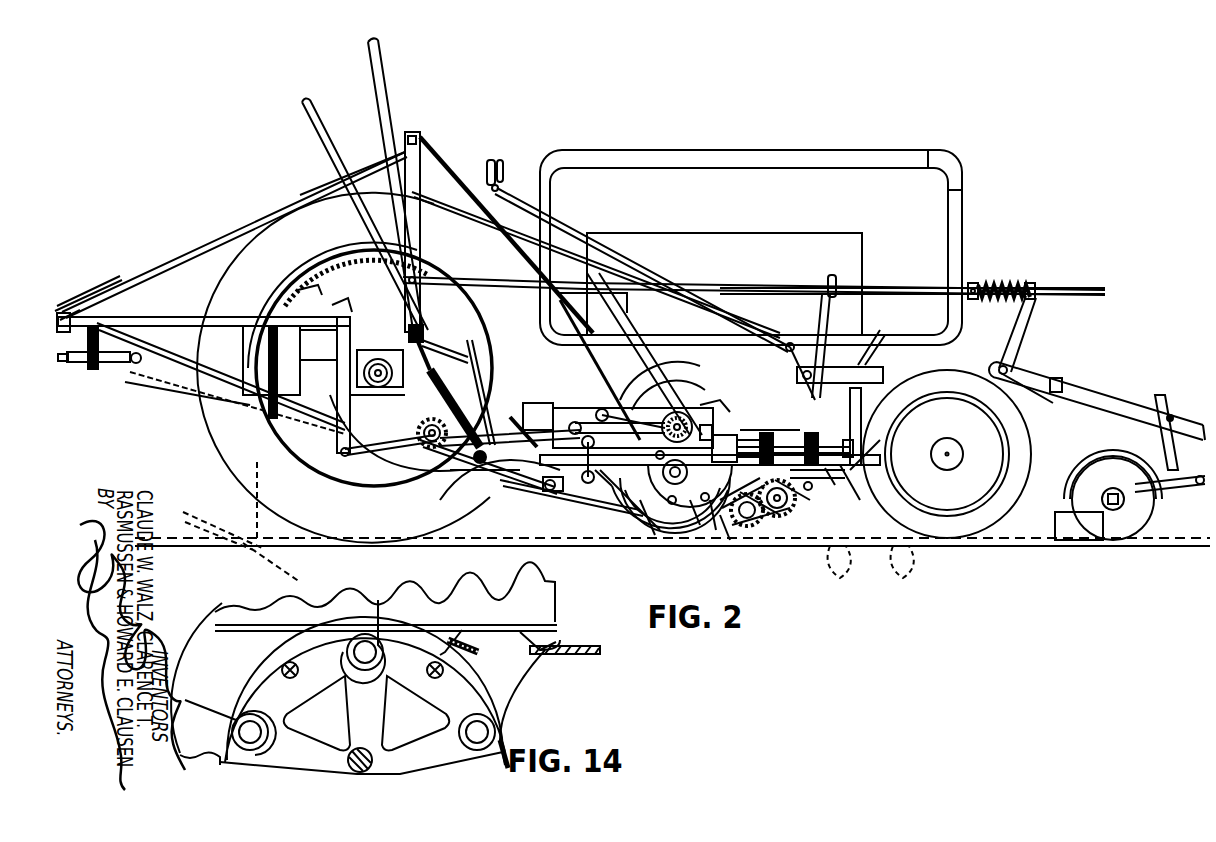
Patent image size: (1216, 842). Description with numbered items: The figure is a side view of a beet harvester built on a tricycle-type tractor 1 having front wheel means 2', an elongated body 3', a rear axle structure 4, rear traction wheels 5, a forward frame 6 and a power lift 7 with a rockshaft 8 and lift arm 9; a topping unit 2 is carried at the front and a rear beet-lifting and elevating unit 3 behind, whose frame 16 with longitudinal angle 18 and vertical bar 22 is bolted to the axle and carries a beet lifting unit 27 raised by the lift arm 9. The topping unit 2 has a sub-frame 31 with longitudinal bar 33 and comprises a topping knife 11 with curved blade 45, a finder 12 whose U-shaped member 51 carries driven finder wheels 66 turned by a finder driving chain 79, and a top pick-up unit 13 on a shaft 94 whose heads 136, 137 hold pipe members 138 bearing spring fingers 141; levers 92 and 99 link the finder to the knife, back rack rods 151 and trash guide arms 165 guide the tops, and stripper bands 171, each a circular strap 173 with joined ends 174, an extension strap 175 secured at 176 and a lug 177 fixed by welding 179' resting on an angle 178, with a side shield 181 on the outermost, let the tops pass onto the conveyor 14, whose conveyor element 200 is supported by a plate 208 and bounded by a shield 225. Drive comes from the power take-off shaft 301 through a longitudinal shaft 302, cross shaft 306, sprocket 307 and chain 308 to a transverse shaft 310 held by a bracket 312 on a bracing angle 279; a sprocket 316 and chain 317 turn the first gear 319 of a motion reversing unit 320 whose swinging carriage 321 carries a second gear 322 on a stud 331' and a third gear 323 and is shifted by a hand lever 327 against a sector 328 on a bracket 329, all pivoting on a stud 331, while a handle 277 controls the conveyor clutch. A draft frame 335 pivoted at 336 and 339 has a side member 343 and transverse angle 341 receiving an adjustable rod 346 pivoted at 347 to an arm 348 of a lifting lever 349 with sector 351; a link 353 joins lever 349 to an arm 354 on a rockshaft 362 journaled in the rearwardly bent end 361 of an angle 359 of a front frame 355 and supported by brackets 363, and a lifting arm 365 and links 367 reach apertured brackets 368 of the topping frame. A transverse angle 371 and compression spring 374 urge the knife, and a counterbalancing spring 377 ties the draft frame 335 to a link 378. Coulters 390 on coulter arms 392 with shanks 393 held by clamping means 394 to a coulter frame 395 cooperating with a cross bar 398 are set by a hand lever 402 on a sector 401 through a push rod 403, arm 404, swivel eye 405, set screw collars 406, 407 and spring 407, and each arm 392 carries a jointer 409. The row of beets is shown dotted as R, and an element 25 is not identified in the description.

In FIG. 2, the tractor 1 is at (676, 142).
In FIG. 2, the topping unit 2 is at (701, 417).
In FIG. 2, the front wheel means 2' is at (962, 454).
In FIG. 2, the rear beet-lifting and elevating unit 3 is at (83, 274).
In FIG. 2, the frame or body 3' is at (756, 224).
In FIG. 2, the rear axle structure 4 is at (378, 396).
In FIG. 2, the rear traction wheels 5 is at (262, 260).
In FIG. 2, the frame 6 is at (692, 340).
In FIG. 2, the power lift 7 is at (300, 295).
In FIG. 2, the rockshaft 8 is at (333, 268).
In FIG. 2, the lift arm 9 is at (309, 280).
In FIG. 2, the topping knife 11 is at (615, 530).
In FIG. 2, the finder or gauge 12 is at (785, 522).
In FIG. 2, the top pick-up means 13 is at (676, 530).
In FIG. 2, the transverse shiftable conveyor 14 is at (782, 424).
In FIG. 2, the frame 16 is at (178, 316).
In FIG. 2, the longitudinally extending angle 18 is at (128, 313).
In FIG. 2, the vertical bar 22 is at (335, 420).
In FIG. 2, the tie rod 25 is at (200, 385).
In FIG. 2, the beet lifting unit 27 is at (248, 568).
In FIG. 2, the sub-frame 31 is at (830, 480).
In FIG. 2, the longitudinally extending bar 33 is at (798, 480).
In FIG. 2, the cutting blade 45 is at (730, 540).
In FIG. 2, the U-shaped member 51 is at (790, 498).
In FIG. 2, the finder wheels 66 is at (778, 520).
In FIG. 2, the finder driving chain 79 is at (748, 500).
In FIG. 2, the lever 92 is at (748, 528).
In FIG. 14, the shaft 94 is at (373, 762).
In FIG. 2, the lever 99 is at (618, 452).
In FIG. 14, the rotatable head 136 is at (388, 690).
In FIG. 2, the rotatable head 137 is at (712, 530).
In FIG. 14, the pipe members 138 is at (348, 660).
In FIG. 14, the spring fingers 141 is at (380, 612).
In FIG. 2, the back rack rods 151 is at (634, 526).
In FIG. 2, the trash guide arms 165 is at (650, 530).
In FIG. 14, the stripper bands 171 is at (522, 742).
In FIG. 14, the strap 173 is at (262, 665).
In FIG. 14, the ends 174 is at (470, 650).
In FIG. 14, the extension strap 175 is at (468, 630).
In FIG. 14, the securing point 176 is at (355, 626).
In FIG. 14, the lug 177 is at (562, 642).
In FIG. 14, the angle 178 is at (592, 650).
In FIG. 14, the welding 179' is at (536, 619).
In FIG. 14, the side shield 181 is at (215, 620).
In FIG. 2, the conveyor element 200 is at (766, 426).
In FIG. 2, the plate 208 is at (847, 499).
In FIG. 2, the shield 225 is at (845, 424).
In FIG. 2, the handle 277 is at (548, 318).
In FIG. 2, the angle 279 is at (422, 142).
In FIG. 2, the power take-off shaft 301 is at (275, 420).
In FIG. 2, the longitudinal shaft 302 is at (232, 365).
In FIG. 2, the cross shaft 306 is at (136, 366).
In FIG. 2, the sprocket 307 is at (130, 365).
In FIG. 2, the chain 308 is at (220, 408).
In FIG. 2, the transverse shaft 310 is at (418, 430).
In FIG. 2, the bracket 312 is at (395, 482).
In FIG. 2, the sprocket 316 is at (430, 478).
In FIG. 2, the sprocket chain 317 is at (530, 425).
In FIG. 2, the first gear 319 is at (690, 392).
In FIG. 2, the motion reversing unit 320 is at (690, 415).
In FIG. 2, the swinging carriage 321 is at (600, 490).
In FIG. 2, the second gear 322 is at (698, 520).
In FIG. 2, the third gear 323 is at (718, 410).
In FIG. 2, the hand lever 327 is at (565, 238).
In FIG. 2, the sector 328 is at (668, 385).
In FIG. 2, the bracket 329 is at (665, 535).
In FIG. 2, the stud 331 is at (600, 370).
In FIG. 2, the stud 331' is at (642, 511).
In FIG. 2, the draft frame 335 is at (478, 490).
In FIG. 2, the pivot 336 is at (348, 452).
In FIG. 2, the pivot 339 is at (545, 505).
In FIG. 2, the transverse angle 341 is at (471, 473).
In FIG. 2, the side member 343 is at (515, 495).
In FIG. 2, the adjustable rod connection 346 is at (470, 358).
In FIG. 2, the pivot 347 is at (468, 340).
In FIG. 2, the forwardly extending arm 348 is at (430, 350).
In FIG. 2, the lifting lever 349 is at (325, 178).
In FIG. 2, the sector 351 is at (352, 305).
In FIG. 2, the link 353 is at (515, 262).
In FIG. 2, the arm 354 is at (834, 297).
In FIG. 2, the front frame 355 is at (886, 388).
In FIG. 2, the angle 359 is at (862, 355).
In FIG. 2, the rearwardly bent end 361 is at (850, 412).
In FIG. 2, the rockshaft 362 is at (786, 349).
In FIG. 2, the brackets 363 is at (800, 348).
In FIG. 2, the lifting arm 365 is at (838, 345).
In FIG. 2, the links 367 is at (862, 428).
In FIG. 2, the apertured brackets 368 is at (862, 452).
In FIG. 2, the transverse angle 371 is at (500, 515).
In FIG. 2, the compression spring 374 is at (490, 432).
In FIG. 2, the counterbalancing spring 377 is at (480, 420).
In FIG. 2, the link 378 is at (400, 352).
In FIG. 2, the coulter 390 is at (1152, 520).
In FIG. 2, the coulter arm 392 is at (1180, 476).
In FIG. 2, the shank 393 is at (1163, 439).
In FIG. 2, the clamping means 394 is at (1177, 415).
In FIG. 2, the coulter-supporting frame 395 is at (1097, 400).
In FIG. 2, the cross bar 398 is at (1058, 378).
In FIG. 2, the sector 401 is at (435, 262).
In FIG. 2, the coulter-adjusting hand lever 402 is at (387, 110).
In FIG. 2, the push rod 403 is at (710, 283).
In FIG. 2, the arm 404 is at (1010, 345).
In FIG. 2, the swivel eye 405 is at (1028, 282).
In FIG. 2, the set screw collar 406 is at (968, 288).
In FIG. 2, the set screw collar 407 is at (998, 283).
In FIG. 2, the jointer 409 is at (1075, 540).
In FIG. 2, the row of beets R is at (1022, 538).